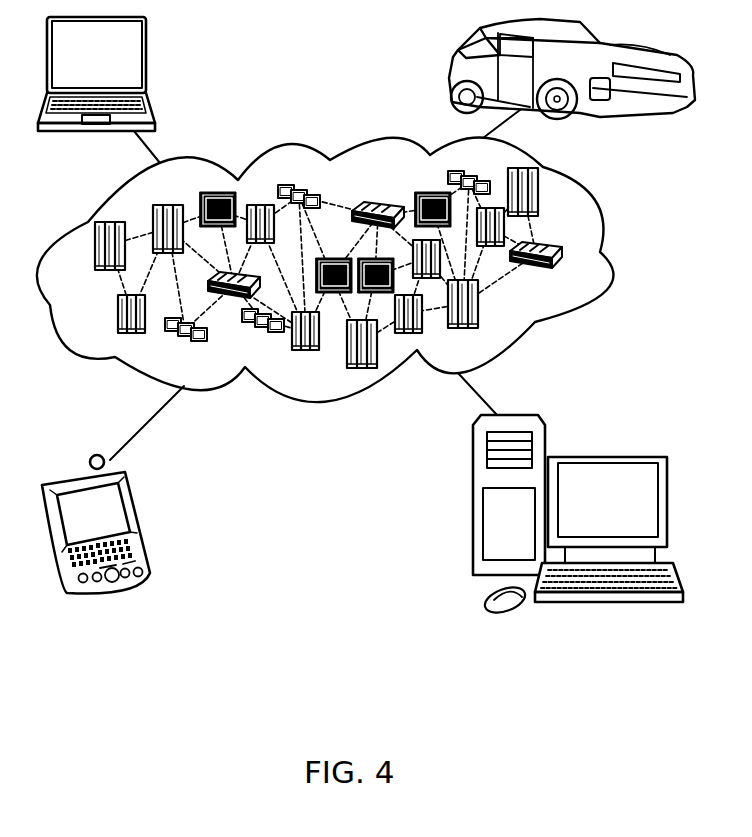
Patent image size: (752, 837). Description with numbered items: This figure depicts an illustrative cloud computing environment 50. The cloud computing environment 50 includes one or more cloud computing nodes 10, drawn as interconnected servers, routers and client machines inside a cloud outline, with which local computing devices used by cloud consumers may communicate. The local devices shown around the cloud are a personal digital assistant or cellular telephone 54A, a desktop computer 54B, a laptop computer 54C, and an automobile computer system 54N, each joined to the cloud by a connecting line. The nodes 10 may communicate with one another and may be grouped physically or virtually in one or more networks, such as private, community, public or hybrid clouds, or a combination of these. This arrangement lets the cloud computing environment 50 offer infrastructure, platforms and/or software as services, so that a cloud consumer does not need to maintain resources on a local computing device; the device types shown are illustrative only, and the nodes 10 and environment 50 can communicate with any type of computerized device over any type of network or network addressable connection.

The cloud computing environment 50 is at (606, 254).
The cloud computing nodes 10 is at (576, 280).
The personal digital assistant (PDA) or cellular telephone 54A is at (137, 522).
The desktop computer 54B is at (612, 457).
The laptop computer 54C is at (146, 62).
The automobile computer system 54N is at (452, 72).